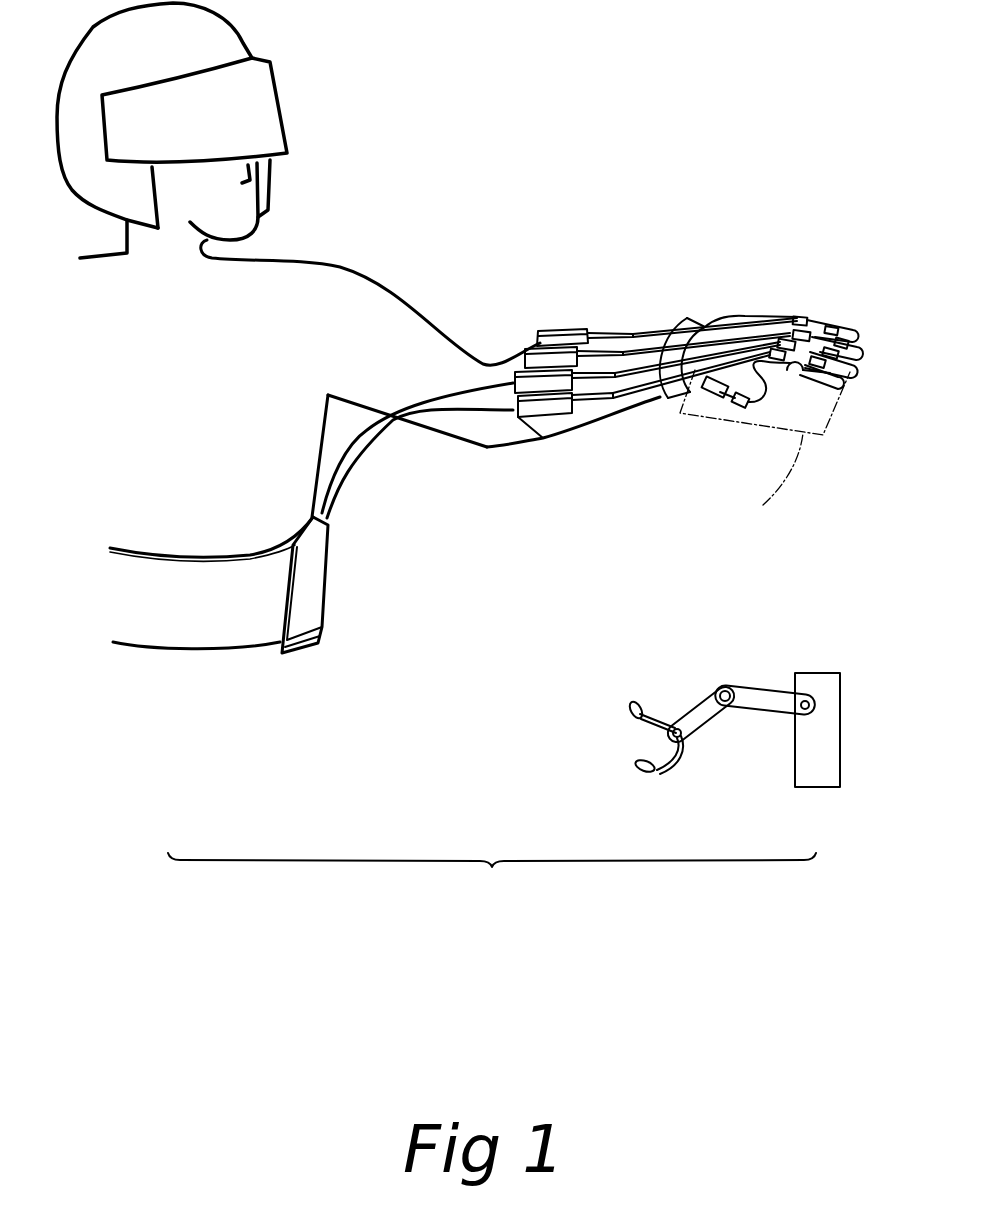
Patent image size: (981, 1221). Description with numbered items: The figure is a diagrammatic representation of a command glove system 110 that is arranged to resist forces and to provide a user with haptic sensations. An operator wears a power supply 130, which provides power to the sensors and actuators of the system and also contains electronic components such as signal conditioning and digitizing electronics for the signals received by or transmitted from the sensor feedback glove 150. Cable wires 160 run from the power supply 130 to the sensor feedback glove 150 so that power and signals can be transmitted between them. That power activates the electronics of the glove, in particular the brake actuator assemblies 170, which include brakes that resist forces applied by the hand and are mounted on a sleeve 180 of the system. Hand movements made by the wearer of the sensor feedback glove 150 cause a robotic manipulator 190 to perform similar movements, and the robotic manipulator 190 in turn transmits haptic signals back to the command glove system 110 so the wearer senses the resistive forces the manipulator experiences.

The command glove system 110 is at (593, 240).
The power supply 130 is at (313, 603).
The sensor feedback glove 150 is at (770, 297).
The cable wires 160 is at (408, 397).
The brake actuator assemblies 170 is at (537, 353).
The sleeve 180 is at (597, 413).
The robotic manipulator 190 is at (733, 652).